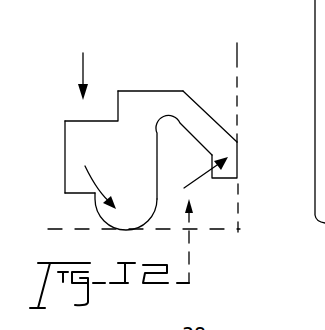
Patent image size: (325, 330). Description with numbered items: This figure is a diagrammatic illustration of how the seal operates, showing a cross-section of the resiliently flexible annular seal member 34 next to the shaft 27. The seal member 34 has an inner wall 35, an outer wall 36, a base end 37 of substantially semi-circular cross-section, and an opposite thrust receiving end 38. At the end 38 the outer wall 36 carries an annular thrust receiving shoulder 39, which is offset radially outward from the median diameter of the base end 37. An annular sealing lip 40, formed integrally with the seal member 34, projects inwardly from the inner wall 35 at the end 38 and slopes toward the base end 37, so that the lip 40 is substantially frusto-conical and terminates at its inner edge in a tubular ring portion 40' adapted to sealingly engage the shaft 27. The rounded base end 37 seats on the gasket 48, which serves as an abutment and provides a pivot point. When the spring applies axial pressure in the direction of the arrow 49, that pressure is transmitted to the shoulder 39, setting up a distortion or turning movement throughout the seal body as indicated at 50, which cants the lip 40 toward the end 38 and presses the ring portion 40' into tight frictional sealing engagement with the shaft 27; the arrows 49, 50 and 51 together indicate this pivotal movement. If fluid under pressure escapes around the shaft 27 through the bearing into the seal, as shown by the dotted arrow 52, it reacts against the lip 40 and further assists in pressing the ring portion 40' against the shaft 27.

The shaft 27 is at (237, 64).
The seal member 34 is at (58, 166).
The inner wall 35 is at (158, 168).
The outer wall 36 is at (64, 135).
The base end 37 is at (95, 210).
The thrust receiving end 38 is at (137, 90).
The thrust receiving shoulder 39 is at (82, 120).
The sealing lip 40 is at (207, 99).
The tubular ring portion 40' is at (248, 160).
The gasket 48 is at (58, 228).
The arrow indicating axial pressure 49 is at (82, 73).
The arrow indicating turning movement 50 is at (94, 186).
The arrow indicating pivotal movement 51 is at (202, 181).
The dotted arrow indicating fluid escape 52 is at (191, 240).